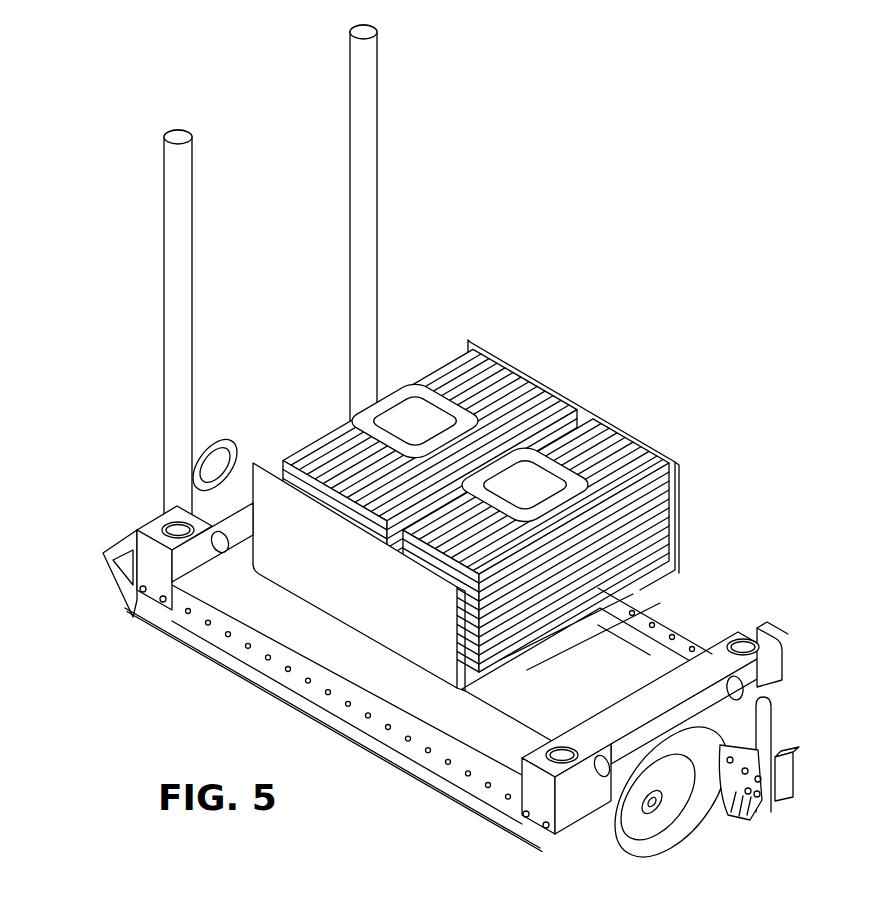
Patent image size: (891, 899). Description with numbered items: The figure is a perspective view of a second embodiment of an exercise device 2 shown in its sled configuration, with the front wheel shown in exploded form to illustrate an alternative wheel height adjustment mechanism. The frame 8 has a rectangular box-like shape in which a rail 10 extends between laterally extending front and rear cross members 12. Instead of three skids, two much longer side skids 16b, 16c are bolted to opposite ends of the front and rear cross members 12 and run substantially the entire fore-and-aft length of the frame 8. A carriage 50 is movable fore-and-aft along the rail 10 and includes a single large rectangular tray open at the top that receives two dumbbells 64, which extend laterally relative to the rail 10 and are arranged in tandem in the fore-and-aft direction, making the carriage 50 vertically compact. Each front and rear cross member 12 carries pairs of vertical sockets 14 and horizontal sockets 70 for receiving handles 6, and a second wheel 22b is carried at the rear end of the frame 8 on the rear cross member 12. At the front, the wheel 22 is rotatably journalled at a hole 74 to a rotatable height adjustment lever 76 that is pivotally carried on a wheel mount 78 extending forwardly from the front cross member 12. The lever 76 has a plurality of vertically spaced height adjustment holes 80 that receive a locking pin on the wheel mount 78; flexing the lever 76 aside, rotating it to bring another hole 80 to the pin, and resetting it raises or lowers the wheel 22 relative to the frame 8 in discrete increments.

The handle 6 is at (192, 196).
The second wheel 22b is at (220, 447).
The dumbbell 64 is at (444, 362).
The exercise device 2 is at (594, 350).
The frame 8 is at (688, 600).
The side skid 16b is at (693, 635).
The vertical socket 14 is at (560, 748).
The cross member 12 is at (180, 560).
The horizontal socket 70 is at (227, 553).
The height adjustment lever 76 is at (768, 727).
The wheel mount 78 is at (792, 758).
The height adjustment hole 80 is at (745, 797).
The hole 74 is at (716, 792).
The wheel 22 is at (668, 823).
The rail 10 is at (527, 670).
The side skid 16c is at (387, 757).
The carriage 50 is at (418, 502).